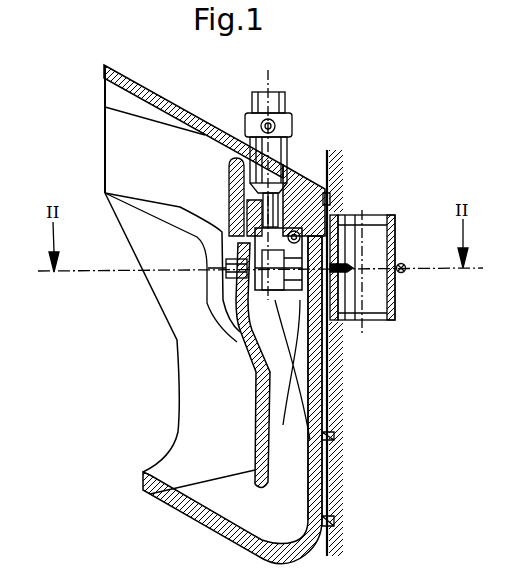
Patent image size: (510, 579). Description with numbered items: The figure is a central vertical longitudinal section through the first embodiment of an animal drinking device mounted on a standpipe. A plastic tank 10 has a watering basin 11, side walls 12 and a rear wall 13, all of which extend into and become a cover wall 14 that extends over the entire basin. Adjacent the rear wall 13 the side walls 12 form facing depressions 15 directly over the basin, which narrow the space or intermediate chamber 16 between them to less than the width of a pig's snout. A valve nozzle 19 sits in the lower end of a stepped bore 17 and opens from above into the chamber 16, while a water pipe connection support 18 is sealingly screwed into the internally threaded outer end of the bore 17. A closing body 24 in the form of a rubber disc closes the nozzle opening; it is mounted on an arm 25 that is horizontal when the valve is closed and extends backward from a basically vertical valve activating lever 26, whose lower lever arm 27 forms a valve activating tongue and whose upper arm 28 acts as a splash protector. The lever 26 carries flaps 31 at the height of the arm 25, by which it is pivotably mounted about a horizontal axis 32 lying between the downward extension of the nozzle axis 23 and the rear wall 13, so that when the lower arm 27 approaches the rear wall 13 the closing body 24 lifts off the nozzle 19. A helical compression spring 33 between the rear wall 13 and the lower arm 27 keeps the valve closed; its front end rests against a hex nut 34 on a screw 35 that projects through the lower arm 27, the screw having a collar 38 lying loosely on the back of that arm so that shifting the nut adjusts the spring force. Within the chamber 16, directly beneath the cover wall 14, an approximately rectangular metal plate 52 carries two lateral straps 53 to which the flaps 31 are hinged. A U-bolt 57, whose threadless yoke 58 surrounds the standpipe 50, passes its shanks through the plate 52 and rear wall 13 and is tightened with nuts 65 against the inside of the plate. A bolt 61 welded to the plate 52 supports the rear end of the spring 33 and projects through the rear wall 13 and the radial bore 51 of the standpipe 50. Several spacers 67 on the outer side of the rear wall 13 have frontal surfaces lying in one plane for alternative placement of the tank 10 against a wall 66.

The tank 10 is at (177, 373).
The watering basin 11 is at (260, 525).
The side walls 12 is at (215, 452).
The rear wall 13 is at (330, 397).
The cover wall 14 is at (161, 100).
The depressions 15 is at (112, 134).
The intermediate chamber 16 is at (334, 203).
The stepped bore 17 is at (320, 197).
The water pipe connection support 18 is at (292, 195).
The valve nozzle 19 is at (222, 195).
The nozzle axis 23 is at (273, 84).
The closing body 24 is at (240, 240).
The arm 25 is at (230, 267).
The valve activating lever 26 is at (254, 405).
The lower lever arm 27 is at (140, 490).
The upper arm 28 is at (228, 167).
The flaps 31 is at (237, 305).
The horizontal axis 32 is at (330, 215).
The helical compression spring 33 is at (255, 335).
The hex nut 34 is at (228, 285).
The screw 35 is at (228, 278).
The collar 38 is at (200, 270).
The standpipe 50 is at (372, 322).
The radial bores 51 is at (348, 258).
The metal plate 52 is at (300, 275).
The lateral straps 53 is at (342, 248).
The U-bolt 57 is at (407, 262).
The yoke 58 is at (402, 273).
The bolt 61 is at (316, 322).
The nuts 65 is at (345, 364).
The wall 66 is at (335, 500).
The spacers 67 is at (340, 198).